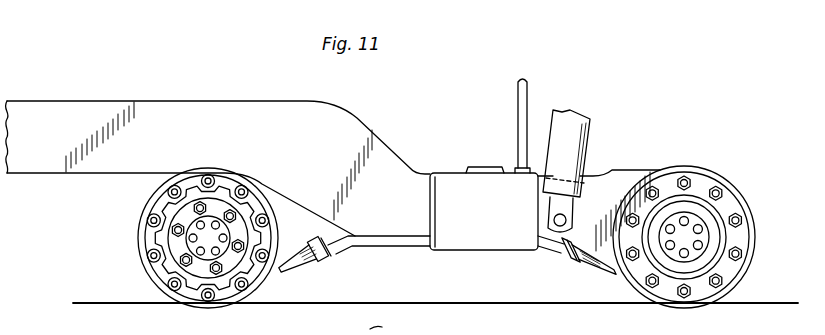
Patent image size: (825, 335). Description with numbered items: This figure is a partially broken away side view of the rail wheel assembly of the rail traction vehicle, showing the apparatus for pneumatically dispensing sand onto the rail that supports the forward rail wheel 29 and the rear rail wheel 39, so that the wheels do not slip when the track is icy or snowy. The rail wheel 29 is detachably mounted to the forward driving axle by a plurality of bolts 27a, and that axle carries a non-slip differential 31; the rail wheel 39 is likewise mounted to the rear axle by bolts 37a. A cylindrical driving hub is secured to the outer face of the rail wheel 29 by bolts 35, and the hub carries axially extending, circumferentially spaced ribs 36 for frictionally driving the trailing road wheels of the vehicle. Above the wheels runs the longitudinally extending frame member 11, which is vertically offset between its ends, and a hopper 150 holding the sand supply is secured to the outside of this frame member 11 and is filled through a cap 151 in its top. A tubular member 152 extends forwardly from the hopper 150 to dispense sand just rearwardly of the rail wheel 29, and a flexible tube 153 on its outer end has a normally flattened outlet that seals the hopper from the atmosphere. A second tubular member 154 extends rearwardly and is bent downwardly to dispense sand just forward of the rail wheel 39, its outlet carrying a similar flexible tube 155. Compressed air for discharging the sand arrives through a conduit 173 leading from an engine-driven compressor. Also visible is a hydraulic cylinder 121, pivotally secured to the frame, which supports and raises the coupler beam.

The frame member 11 is at (180, 102).
The bolts 27a is at (240, 188).
The rail wheel 29 is at (157, 210).
The differential 31 is at (208, 268).
The bolts 35 is at (214, 270).
The ribs 36 is at (172, 273).
The bolts 37a is at (682, 178).
The rail wheel 39 is at (718, 196).
The hydraulic cylinder 121 is at (592, 130).
The hopper 150 is at (503, 218).
The cap 151 is at (485, 167).
The tubular member 152 is at (402, 246).
The flexible tube 153 is at (300, 262).
The second tubular member 154 is at (550, 244).
The flexible tube 155 is at (590, 265).
The conduit 173 is at (527, 90).